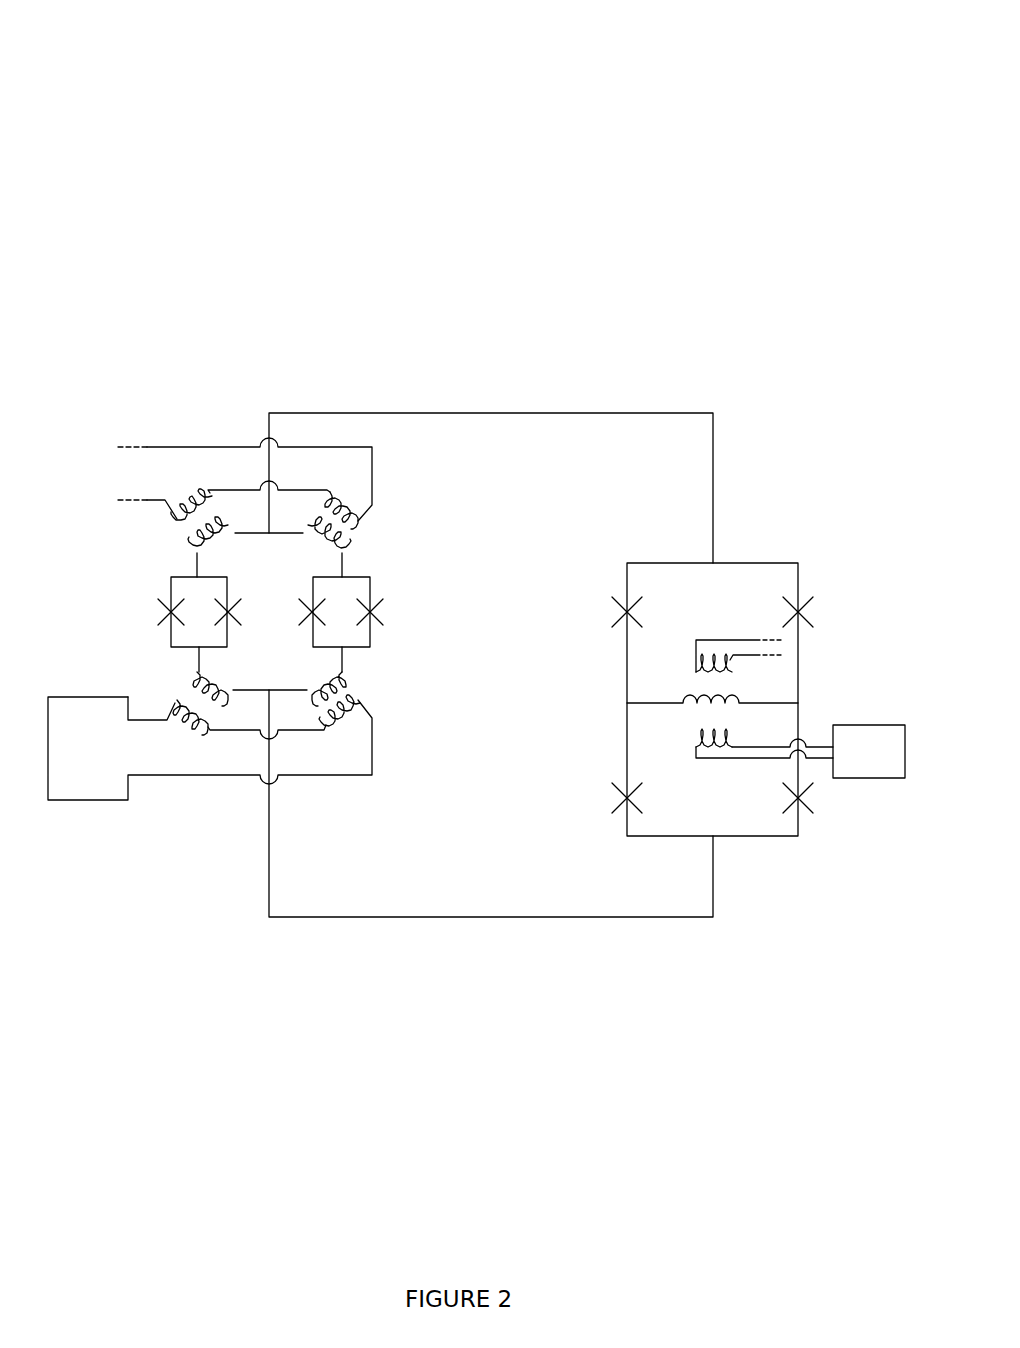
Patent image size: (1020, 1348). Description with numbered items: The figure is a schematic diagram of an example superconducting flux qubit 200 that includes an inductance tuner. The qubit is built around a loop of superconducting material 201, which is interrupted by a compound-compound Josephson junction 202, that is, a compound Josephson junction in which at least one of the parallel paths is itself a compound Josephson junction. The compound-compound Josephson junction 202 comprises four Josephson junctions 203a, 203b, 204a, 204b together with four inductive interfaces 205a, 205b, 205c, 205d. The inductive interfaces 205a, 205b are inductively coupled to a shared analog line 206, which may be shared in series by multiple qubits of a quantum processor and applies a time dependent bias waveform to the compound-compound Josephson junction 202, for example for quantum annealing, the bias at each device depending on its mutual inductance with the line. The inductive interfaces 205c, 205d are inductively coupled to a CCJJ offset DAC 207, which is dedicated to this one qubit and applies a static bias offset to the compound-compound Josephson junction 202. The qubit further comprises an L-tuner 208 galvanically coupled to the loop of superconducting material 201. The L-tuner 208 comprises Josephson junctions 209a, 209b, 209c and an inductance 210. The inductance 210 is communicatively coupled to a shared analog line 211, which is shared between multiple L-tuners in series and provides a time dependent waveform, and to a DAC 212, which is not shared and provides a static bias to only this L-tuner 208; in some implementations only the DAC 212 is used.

The superconducting flux qubit 200 is at (203, 38).
The loop of superconducting material 201 is at (572, 412).
The compound-compound Josephson junction 202 is at (108, 552).
The Josephson junction 203a is at (158, 624).
The Josephson junction 203b is at (226, 610).
The Josephson junction 204a is at (320, 608).
The Josephson junction 204b is at (380, 622).
The inductive interface 205a is at (192, 547).
The inductive interface 205b is at (347, 548).
The inductive interface 205c is at (347, 673).
The inductive interface 205d is at (190, 677).
The shared analog line 206 is at (170, 447).
The CCJJ offset DAC 207 is at (357, 775).
The L-tuner 208 is at (799, 527).
The Josephson junction 209a is at (612, 627).
The Josephson junction 209b is at (807, 602).
The Josephson junction 209c is at (612, 812).
The inductance 210 is at (683, 703).
The shared analog line 211 is at (733, 665).
The DAC 212 is at (845, 725).